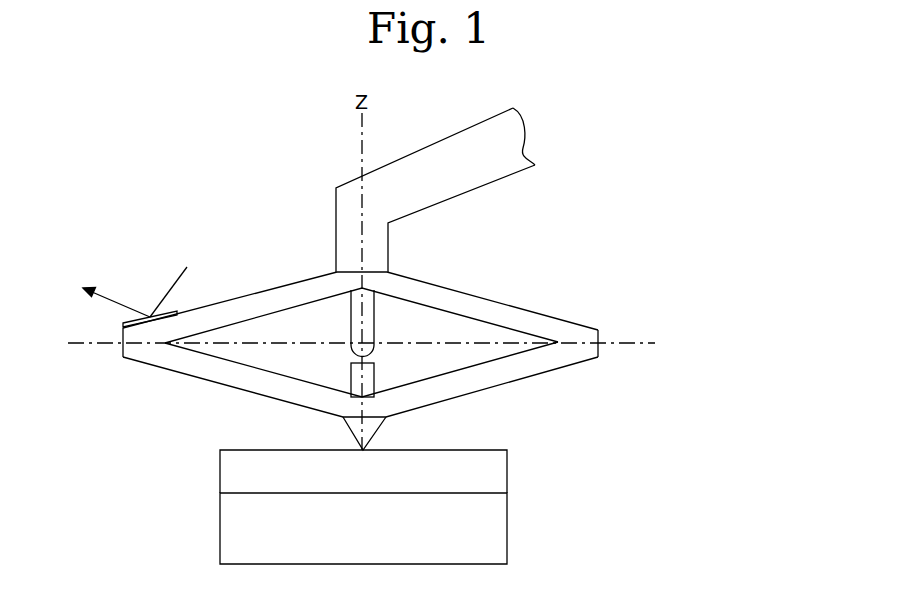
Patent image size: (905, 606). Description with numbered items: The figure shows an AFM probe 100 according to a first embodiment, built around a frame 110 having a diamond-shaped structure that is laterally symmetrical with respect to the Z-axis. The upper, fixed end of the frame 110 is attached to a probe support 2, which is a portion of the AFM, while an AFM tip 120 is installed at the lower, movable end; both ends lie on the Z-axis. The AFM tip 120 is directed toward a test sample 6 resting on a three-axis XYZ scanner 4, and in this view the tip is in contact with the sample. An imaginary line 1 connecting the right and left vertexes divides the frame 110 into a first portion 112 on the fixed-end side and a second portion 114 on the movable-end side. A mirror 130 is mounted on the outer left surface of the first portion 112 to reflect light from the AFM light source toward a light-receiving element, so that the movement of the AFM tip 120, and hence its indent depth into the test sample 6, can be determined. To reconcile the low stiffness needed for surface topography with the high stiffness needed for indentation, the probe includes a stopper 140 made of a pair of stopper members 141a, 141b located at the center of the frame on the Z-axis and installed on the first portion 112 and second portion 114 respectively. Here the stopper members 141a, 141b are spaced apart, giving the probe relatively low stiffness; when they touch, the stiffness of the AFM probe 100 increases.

The imaginary line 1 is at (354, 344).
The probe support 2 is at (462, 138).
The XYZ scanner 4 is at (507, 527).
The test sample 6 is at (507, 470).
The AFM probe 100 is at (564, 270).
The frame 110 is at (458, 344).
The first portion 112 is at (590, 328).
The second portion 114 is at (585, 358).
The AFM tip 120 is at (373, 434).
The mirror 130 is at (177, 313).
The stopper 140 is at (452, 321).
The stopper member 141a is at (375, 313).
The stopper member 141b is at (375, 375).